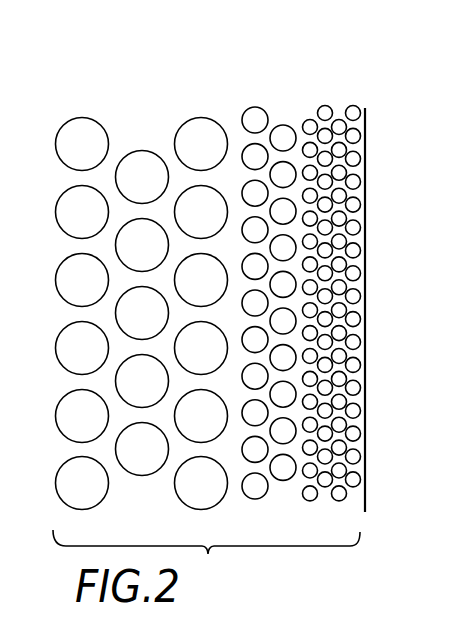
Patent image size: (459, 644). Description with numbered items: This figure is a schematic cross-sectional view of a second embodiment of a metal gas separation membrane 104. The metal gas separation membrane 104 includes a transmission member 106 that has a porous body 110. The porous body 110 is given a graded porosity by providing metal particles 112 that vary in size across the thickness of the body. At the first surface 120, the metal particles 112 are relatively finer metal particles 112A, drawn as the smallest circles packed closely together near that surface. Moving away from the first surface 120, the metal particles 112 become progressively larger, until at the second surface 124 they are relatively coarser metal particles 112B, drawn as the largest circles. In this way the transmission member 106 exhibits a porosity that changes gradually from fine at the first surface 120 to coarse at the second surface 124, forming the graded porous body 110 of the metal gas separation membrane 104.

The metal gas separation membrane 104 is at (137, 97).
The transmission member 106 is at (240, 97).
The porous body 110 is at (152, 140).
The metal particles 112 is at (208, 554).
The relatively finer metal particles 112A is at (353, 106).
The relatively coarser metal particles 112B is at (67, 117).
The first surface 120 is at (365, 445).
The second surface 124 is at (66, 379).